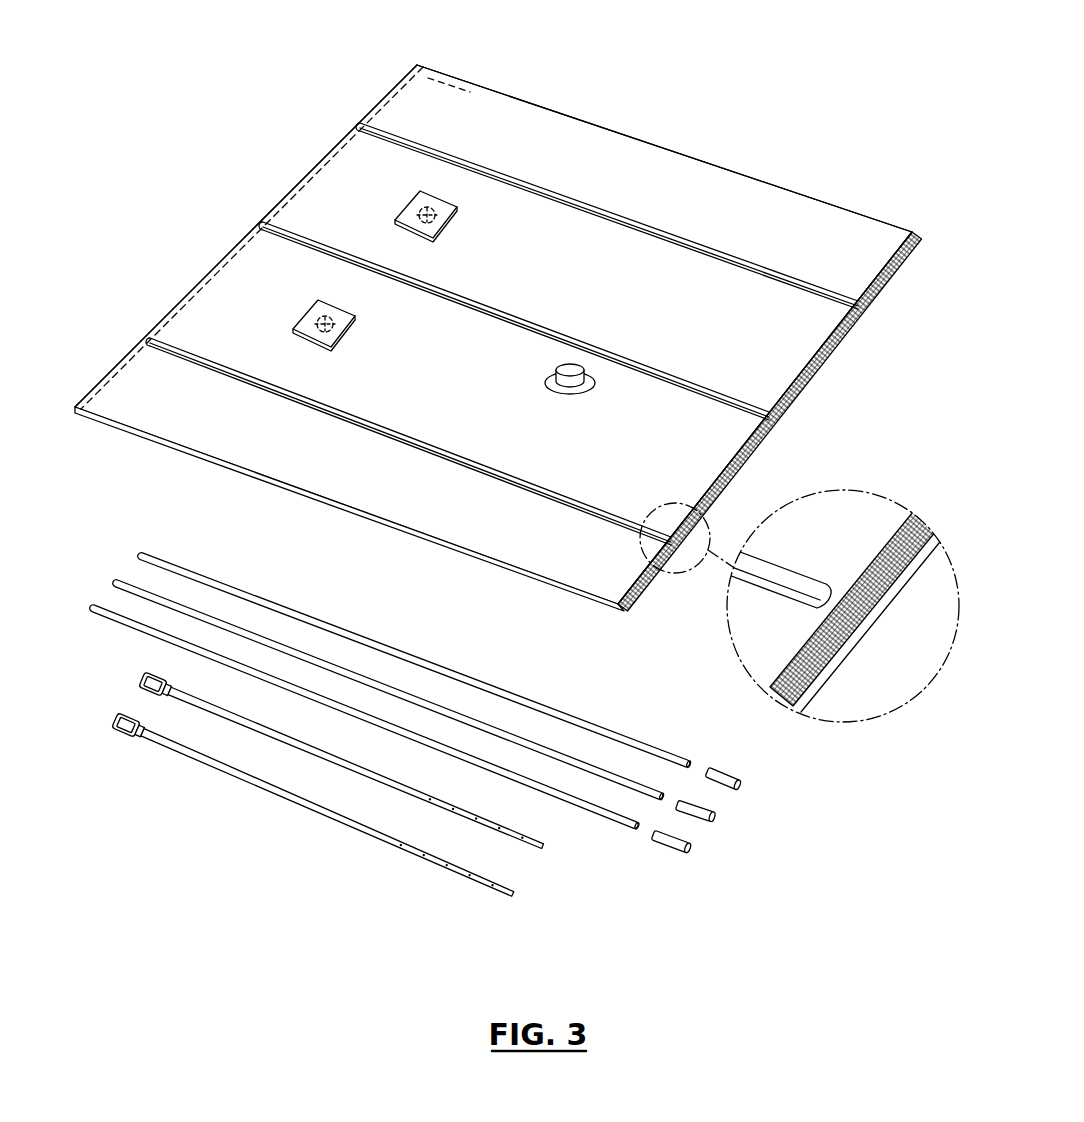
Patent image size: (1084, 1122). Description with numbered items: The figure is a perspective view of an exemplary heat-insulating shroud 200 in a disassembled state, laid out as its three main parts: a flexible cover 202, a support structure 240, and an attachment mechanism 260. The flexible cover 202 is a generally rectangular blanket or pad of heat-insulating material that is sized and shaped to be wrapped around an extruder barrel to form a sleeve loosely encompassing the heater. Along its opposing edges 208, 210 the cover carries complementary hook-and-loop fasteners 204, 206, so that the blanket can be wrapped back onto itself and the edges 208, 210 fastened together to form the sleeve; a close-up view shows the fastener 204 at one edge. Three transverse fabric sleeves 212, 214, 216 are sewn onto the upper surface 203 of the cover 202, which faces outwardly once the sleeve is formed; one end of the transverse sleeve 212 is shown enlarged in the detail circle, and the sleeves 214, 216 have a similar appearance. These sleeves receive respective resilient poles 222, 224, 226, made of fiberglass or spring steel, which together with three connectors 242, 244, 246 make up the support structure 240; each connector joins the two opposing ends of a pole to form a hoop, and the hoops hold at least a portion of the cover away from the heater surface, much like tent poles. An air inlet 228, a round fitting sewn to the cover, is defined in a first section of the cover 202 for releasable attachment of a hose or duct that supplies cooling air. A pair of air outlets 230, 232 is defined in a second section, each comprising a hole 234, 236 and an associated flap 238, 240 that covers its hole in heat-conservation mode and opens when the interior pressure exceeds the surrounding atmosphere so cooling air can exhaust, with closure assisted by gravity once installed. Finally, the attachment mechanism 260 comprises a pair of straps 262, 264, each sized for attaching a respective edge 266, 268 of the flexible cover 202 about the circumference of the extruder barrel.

The heat-insulating shroud 200 is at (696, 74).
The flexible cover 202 is at (498, 342).
The upper surface 203 is at (677, 168).
The fastener 204 is at (810, 388).
The fastener 206 is at (293, 197).
The edge 208 is at (792, 436).
The edge 210 is at (330, 141).
The transverse fabric sleeve 212 is at (472, 455).
The transverse fabric sleeve 214 is at (527, 318).
The transverse fabric sleeve 216 is at (777, 268).
The resilient pole 222 is at (123, 610).
The resilient pole 224 is at (153, 592).
The resilient pole 226 is at (222, 582).
The air inlet 228 is at (600, 373).
The air outlet 230 is at (229, 285).
The air outlet 232 is at (332, 146).
The hole 234 is at (298, 316).
The hole 236 is at (407, 203).
The flap 238 is at (303, 272).
The support structure 240 is at (444, 202).
The connector 242 is at (688, 850).
The connector 244 is at (715, 818).
The connector 246 is at (740, 787).
The attachment mechanism 260 is at (336, 775).
The strap 262 is at (515, 893).
The strap 264 is at (545, 845).
The edge 266 is at (332, 512).
The edge 268 is at (562, 106).